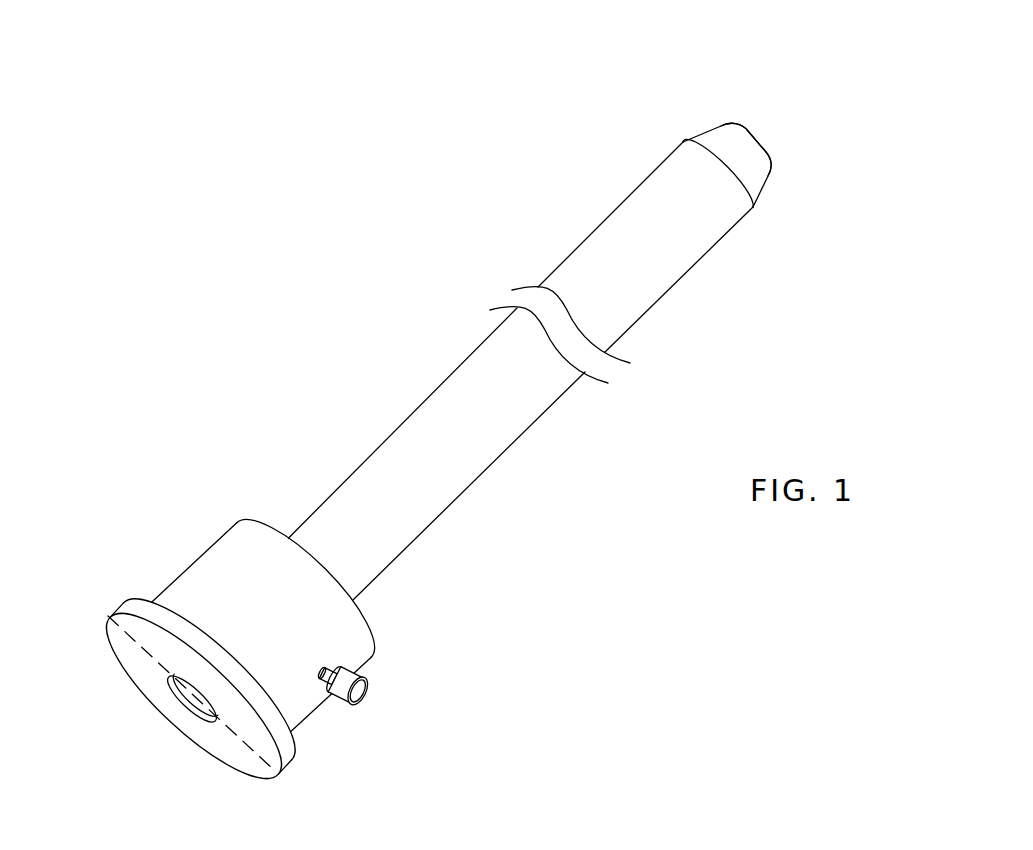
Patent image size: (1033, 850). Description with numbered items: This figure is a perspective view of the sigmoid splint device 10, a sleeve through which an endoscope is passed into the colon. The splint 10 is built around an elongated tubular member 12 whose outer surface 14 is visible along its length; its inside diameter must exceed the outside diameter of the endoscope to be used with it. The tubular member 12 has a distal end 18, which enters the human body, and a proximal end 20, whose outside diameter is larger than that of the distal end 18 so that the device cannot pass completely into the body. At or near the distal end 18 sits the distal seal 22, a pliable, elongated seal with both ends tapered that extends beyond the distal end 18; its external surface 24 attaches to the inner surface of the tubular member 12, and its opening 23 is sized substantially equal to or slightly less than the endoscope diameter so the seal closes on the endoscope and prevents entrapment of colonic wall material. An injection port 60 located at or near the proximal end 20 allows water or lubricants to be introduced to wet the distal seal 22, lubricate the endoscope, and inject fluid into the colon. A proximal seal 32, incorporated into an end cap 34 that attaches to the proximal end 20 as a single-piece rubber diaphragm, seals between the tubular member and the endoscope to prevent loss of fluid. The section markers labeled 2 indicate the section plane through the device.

The sigmoid splint device 10 is at (470, 430).
The elongated tubular member 12 is at (415, 545).
The outer surface 14 is at (482, 410).
The distal end 18 is at (618, 202).
The proximal end 20 is at (372, 652).
The distal seal 22 is at (693, 135).
The opening 23 is at (752, 135).
The external surface 24 is at (752, 177).
The proximal seal 32 is at (174, 701).
The end cap 34 is at (303, 753).
The injection port 60 is at (368, 700).
The section line 2- 2 is at (104, 593).